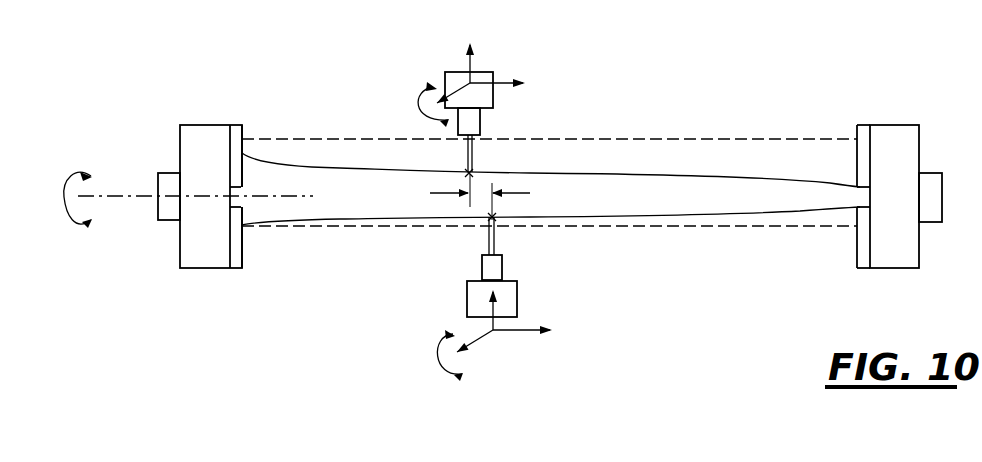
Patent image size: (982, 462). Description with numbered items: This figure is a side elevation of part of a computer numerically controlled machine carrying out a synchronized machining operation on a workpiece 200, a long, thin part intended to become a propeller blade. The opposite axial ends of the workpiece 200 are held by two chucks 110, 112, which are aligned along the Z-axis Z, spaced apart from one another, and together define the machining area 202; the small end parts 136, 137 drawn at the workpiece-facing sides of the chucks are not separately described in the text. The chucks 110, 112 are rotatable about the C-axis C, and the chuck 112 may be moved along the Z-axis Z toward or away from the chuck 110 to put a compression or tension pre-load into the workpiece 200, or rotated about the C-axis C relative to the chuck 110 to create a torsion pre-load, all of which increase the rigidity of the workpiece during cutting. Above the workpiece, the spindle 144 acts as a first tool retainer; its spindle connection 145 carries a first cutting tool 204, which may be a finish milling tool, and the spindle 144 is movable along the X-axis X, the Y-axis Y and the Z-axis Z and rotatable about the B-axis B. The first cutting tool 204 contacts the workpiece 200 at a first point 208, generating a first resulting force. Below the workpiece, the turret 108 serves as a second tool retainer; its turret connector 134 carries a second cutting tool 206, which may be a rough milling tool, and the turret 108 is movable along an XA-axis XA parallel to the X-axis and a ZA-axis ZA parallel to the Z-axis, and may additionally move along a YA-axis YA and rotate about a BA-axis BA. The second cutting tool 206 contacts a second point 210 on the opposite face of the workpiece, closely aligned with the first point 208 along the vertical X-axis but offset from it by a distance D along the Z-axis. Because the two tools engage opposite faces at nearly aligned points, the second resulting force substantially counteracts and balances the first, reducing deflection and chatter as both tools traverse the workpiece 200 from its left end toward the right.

The chuck 110 is at (197, 250).
The chuck 112 is at (900, 250).
The headstock chuck 136 is at (235, 137).
The tailstock chuck 137 is at (865, 132).
The workpiece 200 is at (798, 207).
The machining area 202 is at (647, 138).
The spindle 144 is at (448, 80).
The spindle connection 145 is at (473, 122).
The first cutting tool 204 is at (473, 153).
The first point 208 is at (467, 172).
The turret 108 is at (494, 273).
The turret connector 134 is at (497, 268).
The second cutting tool 206 is at (487, 238).
The second point 210 is at (495, 227).
The X-axis X is at (475, 55).
The Y-axis Y is at (448, 75).
The Z-axis Z is at (507, 80).
The B-axis B is at (418, 103).
The C-axis C is at (70, 177).
The distance D is at (490, 197).
The XA-axis XA is at (488, 310).
The YA-axis YA is at (485, 338).
The ZA-axis ZA is at (520, 327).
The BA-axis BA is at (443, 370).